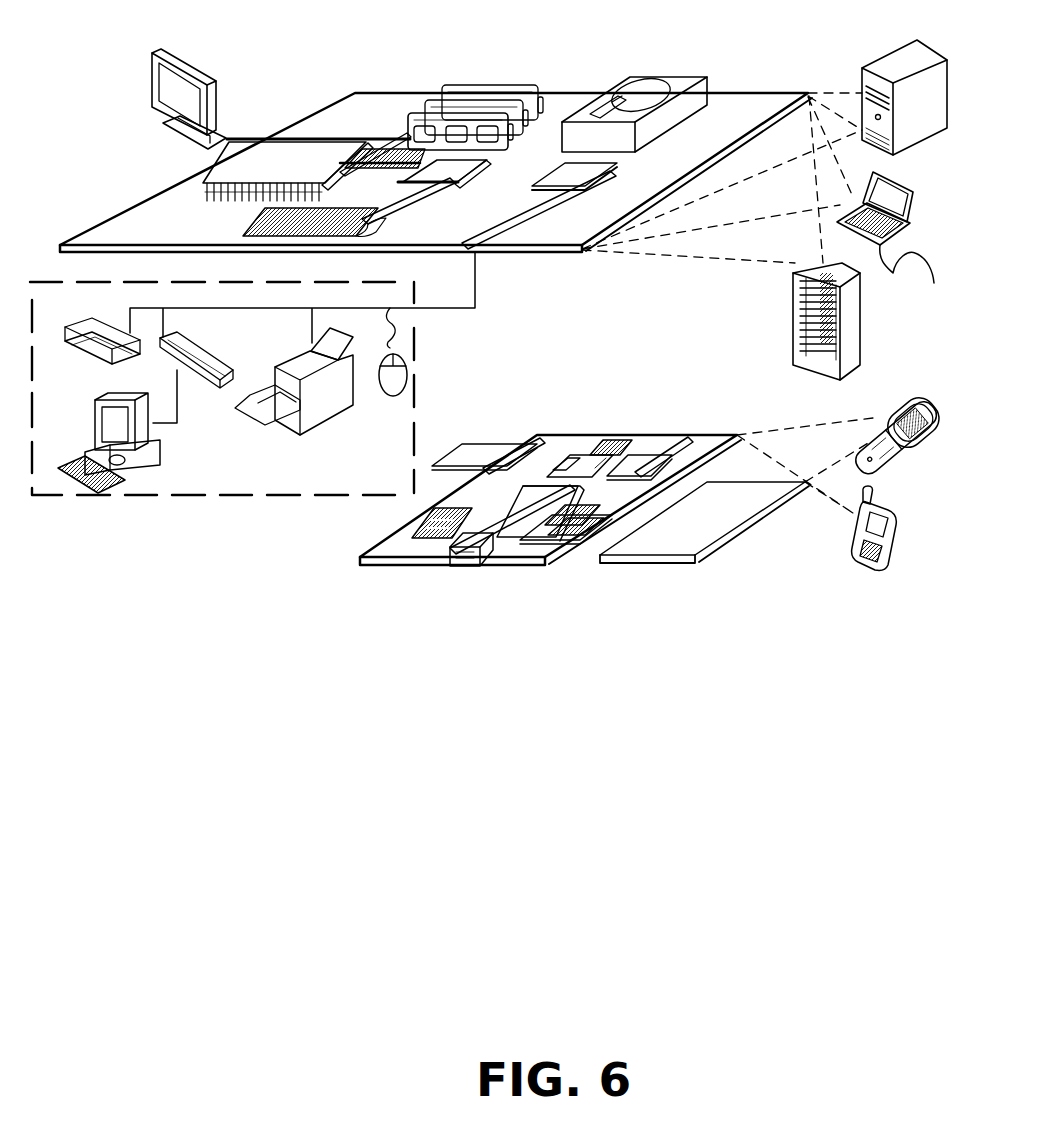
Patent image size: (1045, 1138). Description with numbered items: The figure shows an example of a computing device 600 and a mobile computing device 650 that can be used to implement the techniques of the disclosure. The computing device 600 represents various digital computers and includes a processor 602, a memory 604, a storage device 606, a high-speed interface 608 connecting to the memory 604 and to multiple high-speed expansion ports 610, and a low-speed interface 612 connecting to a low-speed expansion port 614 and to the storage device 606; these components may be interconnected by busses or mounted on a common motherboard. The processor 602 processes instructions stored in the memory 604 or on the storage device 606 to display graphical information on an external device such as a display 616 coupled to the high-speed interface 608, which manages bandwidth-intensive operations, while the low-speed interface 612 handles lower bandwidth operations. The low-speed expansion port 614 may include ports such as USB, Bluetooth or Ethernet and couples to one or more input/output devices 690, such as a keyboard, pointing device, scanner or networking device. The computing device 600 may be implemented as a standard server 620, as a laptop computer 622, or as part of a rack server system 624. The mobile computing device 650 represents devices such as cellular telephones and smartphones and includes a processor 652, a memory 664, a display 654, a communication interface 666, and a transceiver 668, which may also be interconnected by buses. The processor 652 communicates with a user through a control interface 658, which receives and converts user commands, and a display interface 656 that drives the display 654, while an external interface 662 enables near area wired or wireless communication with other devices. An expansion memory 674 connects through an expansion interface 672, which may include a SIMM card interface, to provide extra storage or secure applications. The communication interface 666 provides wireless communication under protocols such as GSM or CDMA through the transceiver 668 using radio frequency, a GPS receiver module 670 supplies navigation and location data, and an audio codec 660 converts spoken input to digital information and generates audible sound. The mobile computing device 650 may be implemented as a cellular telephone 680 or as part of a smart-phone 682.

The computing device 600 is at (295, 63).
The processor 602 is at (204, 178).
The memory 604 is at (461, 85).
The storage device 606 is at (631, 78).
The high-speed interface 608 is at (383, 135).
The high-speed expansion ports 610 is at (248, 209).
The low-speed interface 612 is at (554, 160).
The low-speed expansion port 614 is at (512, 252).
The display 616 is at (148, 56).
The standard server 620 is at (862, 76).
The laptop computer 622 is at (894, 239).
The rack server system 624 is at (793, 337).
The mobile computing device 650 is at (336, 579).
The processor 652 is at (482, 566).
The display 654 is at (668, 549).
The display interface 656 is at (560, 548).
The control interface 658 is at (590, 536).
The audio codec 660 is at (590, 544).
The external interface 662 is at (465, 568).
The memory 664 is at (424, 520).
The communication interface 666 is at (582, 457).
The transceiver 668 is at (652, 454).
The GPS receiver module 670 is at (615, 439).
The expansion interface 672 is at (520, 455).
The expansion memory 674 is at (473, 446).
The cellular telephone 680 is at (890, 382).
The smart-phone 682 is at (851, 543).
The input/output devices 690 is at (142, 495).